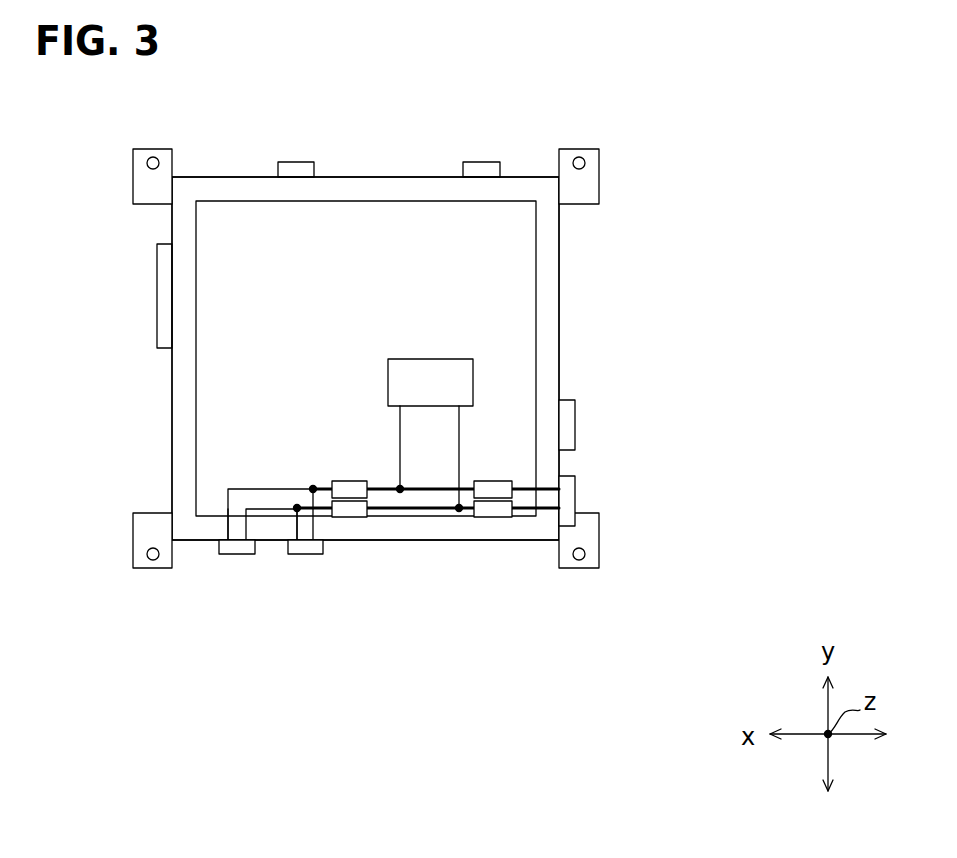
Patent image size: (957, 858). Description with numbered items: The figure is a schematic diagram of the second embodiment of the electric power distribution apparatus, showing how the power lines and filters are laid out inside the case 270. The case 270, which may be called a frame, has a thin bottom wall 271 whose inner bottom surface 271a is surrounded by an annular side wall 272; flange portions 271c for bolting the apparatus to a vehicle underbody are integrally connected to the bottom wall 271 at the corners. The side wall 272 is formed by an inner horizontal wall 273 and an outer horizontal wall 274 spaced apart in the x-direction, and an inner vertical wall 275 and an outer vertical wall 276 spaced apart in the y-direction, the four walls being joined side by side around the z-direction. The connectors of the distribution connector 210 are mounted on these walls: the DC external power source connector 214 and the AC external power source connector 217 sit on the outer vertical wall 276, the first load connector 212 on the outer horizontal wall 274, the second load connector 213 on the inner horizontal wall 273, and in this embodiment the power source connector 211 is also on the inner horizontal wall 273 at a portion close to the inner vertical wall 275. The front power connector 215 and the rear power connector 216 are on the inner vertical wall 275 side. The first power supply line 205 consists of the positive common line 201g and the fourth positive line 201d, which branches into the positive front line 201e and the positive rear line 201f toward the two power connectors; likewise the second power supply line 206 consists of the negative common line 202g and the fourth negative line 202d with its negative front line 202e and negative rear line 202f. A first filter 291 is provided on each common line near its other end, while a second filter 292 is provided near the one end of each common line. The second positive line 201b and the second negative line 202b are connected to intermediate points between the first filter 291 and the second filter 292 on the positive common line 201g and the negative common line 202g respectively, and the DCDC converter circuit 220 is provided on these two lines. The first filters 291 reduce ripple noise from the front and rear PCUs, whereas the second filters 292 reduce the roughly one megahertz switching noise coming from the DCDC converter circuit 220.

The case 270 is at (525, 91).
The bottom wall 271 is at (508, 212).
The inner bottom surface 271a is at (510, 260).
The flange portion 271c is at (133, 189).
The side wall 272 is at (547, 173).
The inner horizontal wall 273 is at (560, 317).
The outer horizontal wall 274 is at (172, 437).
The inner vertical wall 275 is at (447, 540).
The outer vertical wall 276 is at (400, 177).
The distribution connector 210 is at (570, 390).
The power source connector 211 is at (575, 488).
The first load connector 212 is at (157, 263).
The second load connector 213 is at (575, 425).
The DC external power source connector 214 is at (478, 162).
The front power connector 215 is at (313, 554).
The rear power connector 216 is at (226, 554).
The AC external power source connector 217 is at (293, 162).
The DCDC converter circuit 220 is at (432, 359).
The first power supply line 205 is at (235, 361).
The second positive line 201b is at (402, 456).
The fourth positive line 201d is at (327, 415).
The positive front line 201e is at (308, 501).
The positive rear line 201f is at (256, 489).
The positive common line 201g is at (392, 487).
The second power supply line 206 is at (415, 729).
The second negative line 202b is at (461, 456).
The fourth negative line 202d is at (195, 675).
The negative front line 202e is at (296, 523).
The negative rear line 202f is at (248, 523).
The negative common line 202g is at (422, 512).
The first filter 291 is at (348, 481).
The second filter 292 is at (493, 481).